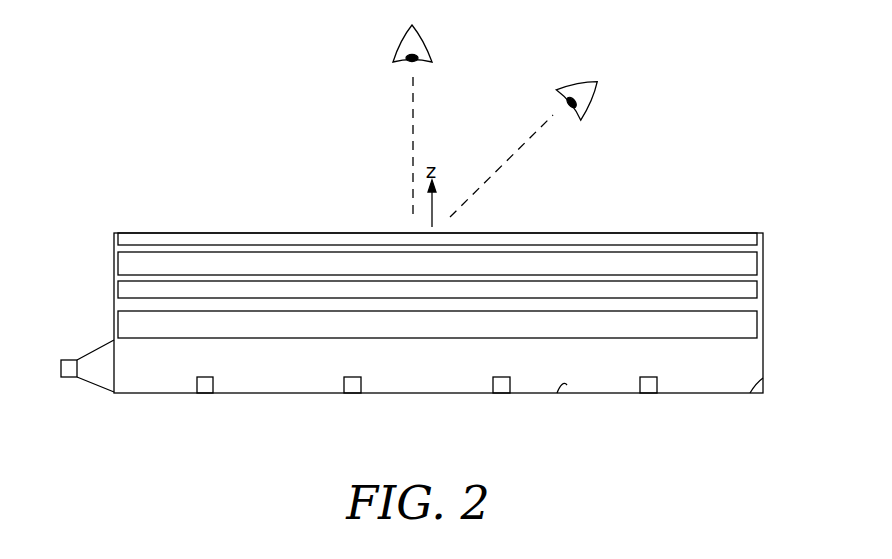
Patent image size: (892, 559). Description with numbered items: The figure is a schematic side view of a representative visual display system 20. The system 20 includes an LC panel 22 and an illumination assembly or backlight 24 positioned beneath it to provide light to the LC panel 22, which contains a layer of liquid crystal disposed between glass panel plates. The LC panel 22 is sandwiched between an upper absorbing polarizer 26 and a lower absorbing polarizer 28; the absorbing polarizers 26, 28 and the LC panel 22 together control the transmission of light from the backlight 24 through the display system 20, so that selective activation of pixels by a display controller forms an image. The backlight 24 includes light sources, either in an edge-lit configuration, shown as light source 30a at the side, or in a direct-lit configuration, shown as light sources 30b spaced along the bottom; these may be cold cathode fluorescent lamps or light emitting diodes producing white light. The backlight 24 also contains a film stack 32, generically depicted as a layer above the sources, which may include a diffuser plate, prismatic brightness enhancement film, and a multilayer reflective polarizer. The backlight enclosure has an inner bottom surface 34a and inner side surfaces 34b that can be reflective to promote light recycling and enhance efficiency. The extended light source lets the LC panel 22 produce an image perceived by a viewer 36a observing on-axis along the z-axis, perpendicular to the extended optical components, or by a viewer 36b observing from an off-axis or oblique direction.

The visual display system 20 is at (181, 154).
The LC panel 22 is at (752, 264).
The backlight 24 is at (771, 311).
The upper absorbing polarizer 26 is at (752, 240).
The lower absorbing polarizer 28 is at (752, 290).
The film stack 32 is at (130, 322).
The light source 30a is at (61, 368).
The light sources 30b is at (205, 393).
The inner bottom surface 34a is at (567, 385).
The inner side surfaces 34b is at (750, 393).
The viewer 36a is at (416, 46).
The viewer 36b is at (584, 89).